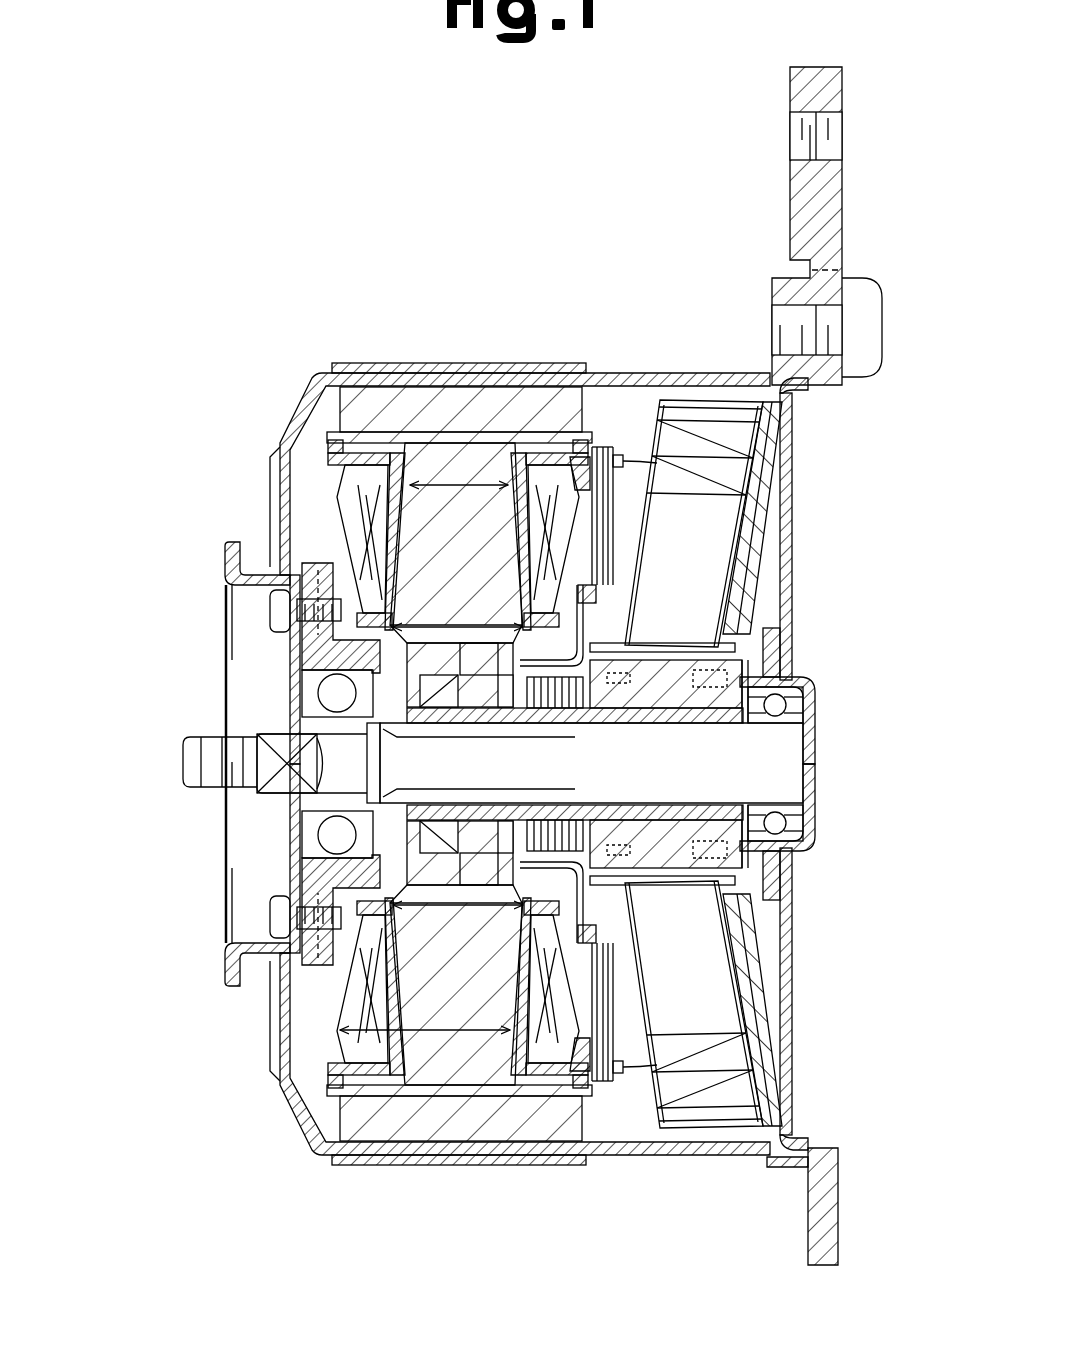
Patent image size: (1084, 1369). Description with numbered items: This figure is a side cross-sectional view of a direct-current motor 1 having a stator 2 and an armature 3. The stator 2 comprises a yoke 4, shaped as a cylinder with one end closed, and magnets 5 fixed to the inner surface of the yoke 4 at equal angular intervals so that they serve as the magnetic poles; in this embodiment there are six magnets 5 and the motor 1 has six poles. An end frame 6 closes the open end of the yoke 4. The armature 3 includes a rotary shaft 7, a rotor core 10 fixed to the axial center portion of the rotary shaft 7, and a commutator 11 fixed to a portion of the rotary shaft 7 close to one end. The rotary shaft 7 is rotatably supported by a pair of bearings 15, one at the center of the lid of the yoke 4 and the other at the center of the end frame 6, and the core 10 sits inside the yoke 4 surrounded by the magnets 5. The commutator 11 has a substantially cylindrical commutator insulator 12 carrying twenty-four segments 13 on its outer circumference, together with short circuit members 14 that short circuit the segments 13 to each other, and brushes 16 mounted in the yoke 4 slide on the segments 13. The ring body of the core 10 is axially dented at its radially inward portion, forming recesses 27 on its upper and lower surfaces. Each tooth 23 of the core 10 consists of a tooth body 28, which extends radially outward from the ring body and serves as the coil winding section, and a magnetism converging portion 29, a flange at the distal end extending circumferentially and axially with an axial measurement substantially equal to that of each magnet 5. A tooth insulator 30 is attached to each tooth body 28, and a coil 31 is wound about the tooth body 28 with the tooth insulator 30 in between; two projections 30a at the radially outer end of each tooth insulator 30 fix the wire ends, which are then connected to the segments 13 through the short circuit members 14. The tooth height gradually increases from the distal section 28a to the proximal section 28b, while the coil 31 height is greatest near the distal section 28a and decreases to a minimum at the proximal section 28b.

The direct-current motor 1 is at (269, 239).
The stator 2 is at (683, 666).
The armature 3 is at (600, 813).
The yoke 4 is at (617, 373).
The magnets 5 is at (357, 388).
The end frame 6 is at (792, 478).
The rotary shaft 7 is at (280, 723).
The rotor core 10 is at (310, 813).
The commutator 11 is at (760, 662).
The commutator insulator 12 is at (680, 710).
The segments 13 is at (637, 652).
The short circuit members 14 is at (577, 723).
The bearings 15 is at (307, 665).
The brushes 16 is at (773, 610).
The tooth 23 is at (359, 764).
The recesses 27 is at (407, 877).
The tooth body 28 is at (407, 563).
The distal section 28a is at (640, 543).
The proximal section 28b is at (630, 607).
The magnetism converging portion 29 is at (340, 443).
The tooth insulator 30 is at (597, 443).
The projections 30a is at (643, 503).
The coil 31 is at (590, 527).